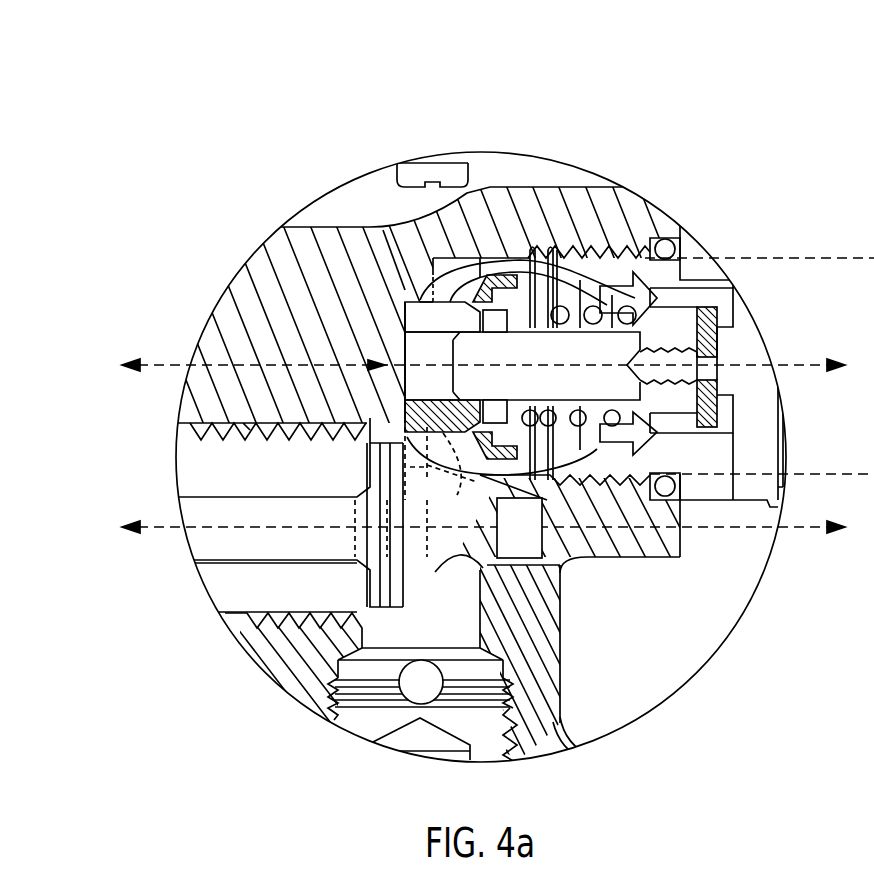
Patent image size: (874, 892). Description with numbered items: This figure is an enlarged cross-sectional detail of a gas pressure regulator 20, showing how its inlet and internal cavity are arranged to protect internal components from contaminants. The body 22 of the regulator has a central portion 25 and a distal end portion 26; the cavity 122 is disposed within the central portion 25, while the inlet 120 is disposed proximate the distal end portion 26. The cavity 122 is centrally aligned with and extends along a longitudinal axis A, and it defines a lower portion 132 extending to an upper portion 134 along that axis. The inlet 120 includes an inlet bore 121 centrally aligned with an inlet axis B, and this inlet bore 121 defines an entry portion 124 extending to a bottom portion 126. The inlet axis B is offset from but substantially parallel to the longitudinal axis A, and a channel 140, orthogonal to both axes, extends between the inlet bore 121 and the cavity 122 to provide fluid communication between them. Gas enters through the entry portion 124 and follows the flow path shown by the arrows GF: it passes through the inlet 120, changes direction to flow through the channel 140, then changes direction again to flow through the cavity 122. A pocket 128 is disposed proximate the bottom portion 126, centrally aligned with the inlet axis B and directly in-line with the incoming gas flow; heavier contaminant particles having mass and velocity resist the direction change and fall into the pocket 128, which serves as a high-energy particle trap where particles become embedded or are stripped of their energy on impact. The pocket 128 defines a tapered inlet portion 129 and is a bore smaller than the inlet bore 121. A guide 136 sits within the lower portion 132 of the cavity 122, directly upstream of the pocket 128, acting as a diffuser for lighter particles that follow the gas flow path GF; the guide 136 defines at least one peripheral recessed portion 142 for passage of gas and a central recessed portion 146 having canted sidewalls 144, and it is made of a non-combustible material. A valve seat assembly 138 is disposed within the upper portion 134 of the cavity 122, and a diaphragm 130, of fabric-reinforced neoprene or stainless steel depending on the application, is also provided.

The gas pressure regulator 20 is at (652, 128).
The body 22 is at (287, 232).
The central portion 25 is at (346, 345).
The distal end portion 26 is at (128, 447).
The inlet 120 is at (174, 512).
The inlet bore 121 is at (245, 566).
The cavity 122 is at (497, 478).
The entry portion 124 is at (208, 561).
The bottom portion 126 is at (457, 547).
The pocket 128 is at (560, 660).
The tapered inlet portion 129 is at (583, 745).
The diaphragm 130 is at (787, 488).
The lower portion 132 is at (472, 394).
The upper portion 134 is at (665, 303).
The guide 136 is at (400, 286).
The valve seat assembly 138 is at (717, 332).
The channel 140 is at (452, 485).
The peripheral recessed portion 142 is at (455, 275).
The canted sidewalls 144 is at (447, 290).
The central recessed portion 146 is at (430, 184).
The longitudinal axis A is at (798, 370).
The inlet axis B is at (800, 530).
The gas flow path GF is at (600, 282).